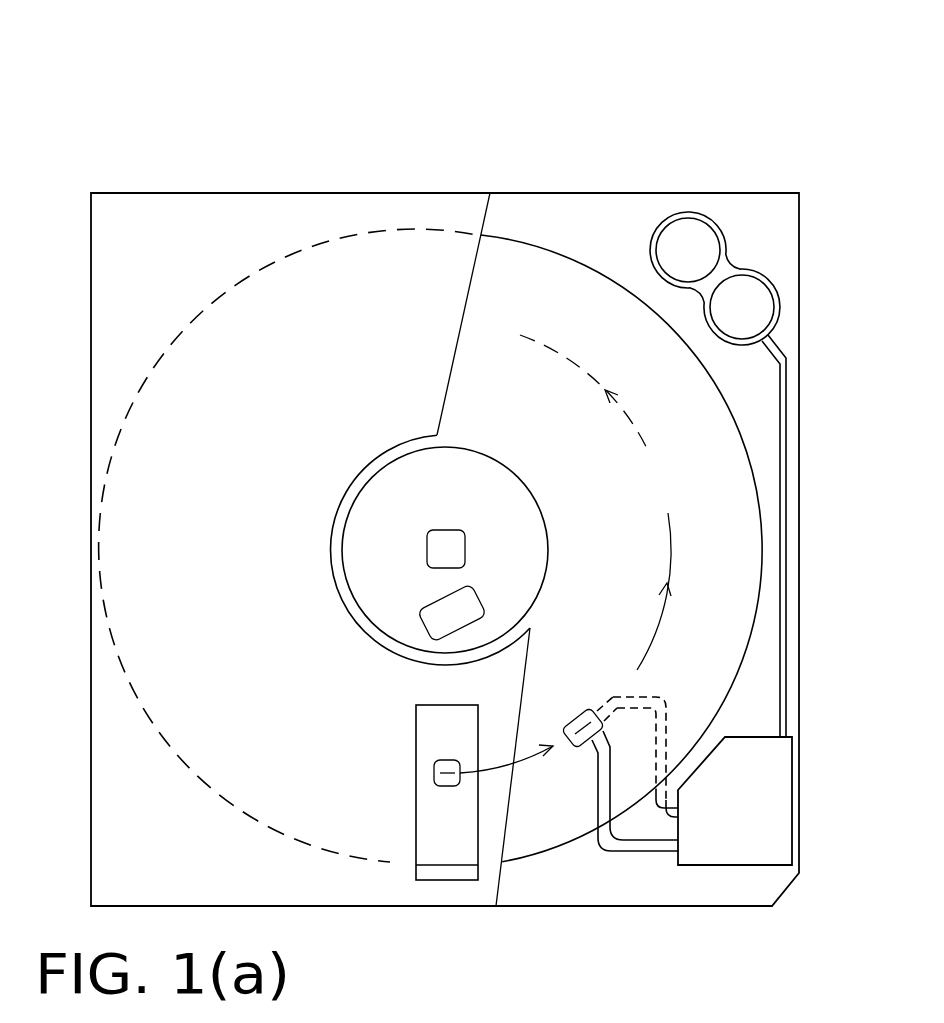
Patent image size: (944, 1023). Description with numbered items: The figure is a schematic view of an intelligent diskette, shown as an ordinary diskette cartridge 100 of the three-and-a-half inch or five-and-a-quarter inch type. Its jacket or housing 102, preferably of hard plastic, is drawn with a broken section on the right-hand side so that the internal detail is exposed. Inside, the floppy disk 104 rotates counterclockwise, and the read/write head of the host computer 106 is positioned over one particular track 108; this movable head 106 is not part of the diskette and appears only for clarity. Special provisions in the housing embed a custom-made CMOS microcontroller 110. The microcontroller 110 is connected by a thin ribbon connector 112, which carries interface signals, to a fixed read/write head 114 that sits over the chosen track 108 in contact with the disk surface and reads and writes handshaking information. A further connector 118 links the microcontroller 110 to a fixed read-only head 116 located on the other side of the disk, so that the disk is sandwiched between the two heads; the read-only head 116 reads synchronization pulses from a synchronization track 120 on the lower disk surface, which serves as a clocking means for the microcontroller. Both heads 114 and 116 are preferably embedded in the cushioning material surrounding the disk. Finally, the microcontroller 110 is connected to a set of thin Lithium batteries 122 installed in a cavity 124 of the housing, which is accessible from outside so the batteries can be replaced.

The diskette cartridge 100 is at (467, 92).
The housing 102 is at (218, 220).
The floppy disk 104 is at (499, 292).
The read/write head of the host computer 106 is at (428, 762).
The track 108 is at (670, 566).
The microcontroller 110 is at (723, 955).
The thin ribbon connector 112 is at (630, 852).
The fixed read/write head 114 is at (577, 714).
The fixed read-only head 116 is at (592, 701).
The connector 118 is at (661, 700).
The synchronization track 120 is at (590, 372).
The Lithium batteries 122 is at (685, 215).
The cavity 124 is at (758, 272).